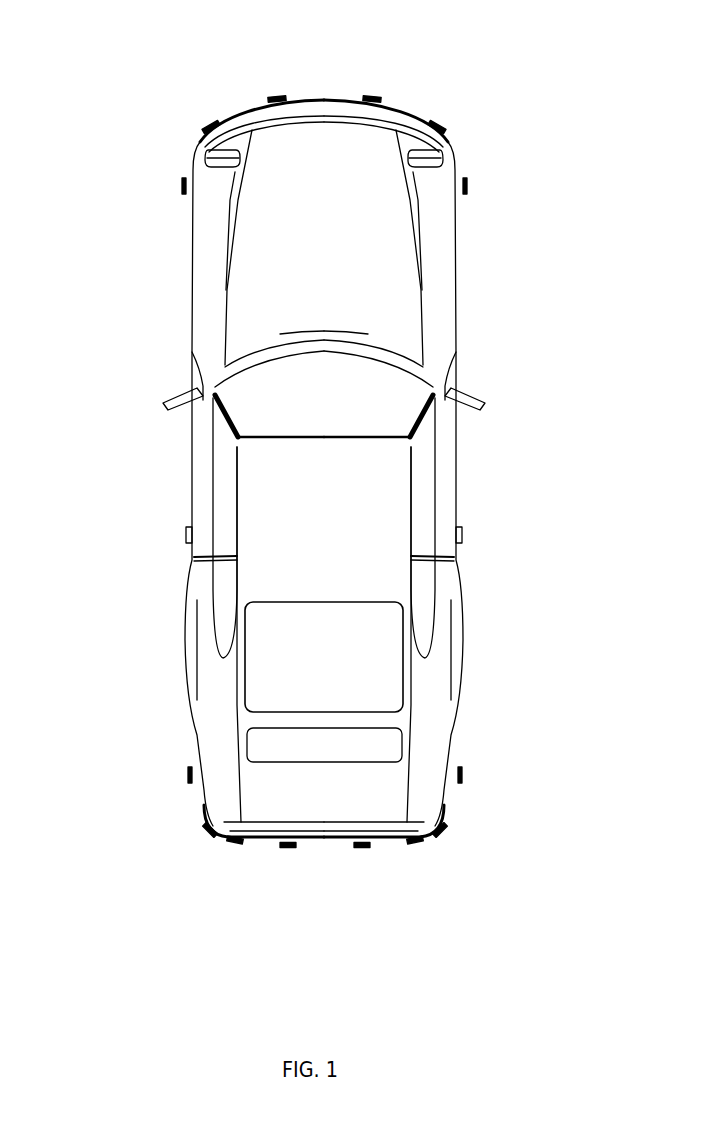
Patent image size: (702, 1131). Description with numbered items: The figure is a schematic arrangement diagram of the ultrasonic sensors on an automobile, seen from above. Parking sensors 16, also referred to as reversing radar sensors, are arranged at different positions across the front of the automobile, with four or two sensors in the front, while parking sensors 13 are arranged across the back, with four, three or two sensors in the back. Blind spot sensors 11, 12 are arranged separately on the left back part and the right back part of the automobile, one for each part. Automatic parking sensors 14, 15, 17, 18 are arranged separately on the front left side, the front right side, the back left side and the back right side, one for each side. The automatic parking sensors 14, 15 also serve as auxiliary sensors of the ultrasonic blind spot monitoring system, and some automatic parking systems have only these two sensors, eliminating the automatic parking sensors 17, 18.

The blind spot sensor 11 is at (203, 836).
The blind spot sensor 12 is at (450, 833).
The parking sensors 13 is at (412, 845).
The automatic parking sensor 14 is at (176, 184).
The automatic parking sensor 15 is at (473, 184).
The parking sensors 16 is at (430, 120).
The automatic parking sensor 17 is at (181, 777).
The automatic parking sensor 18 is at (468, 777).